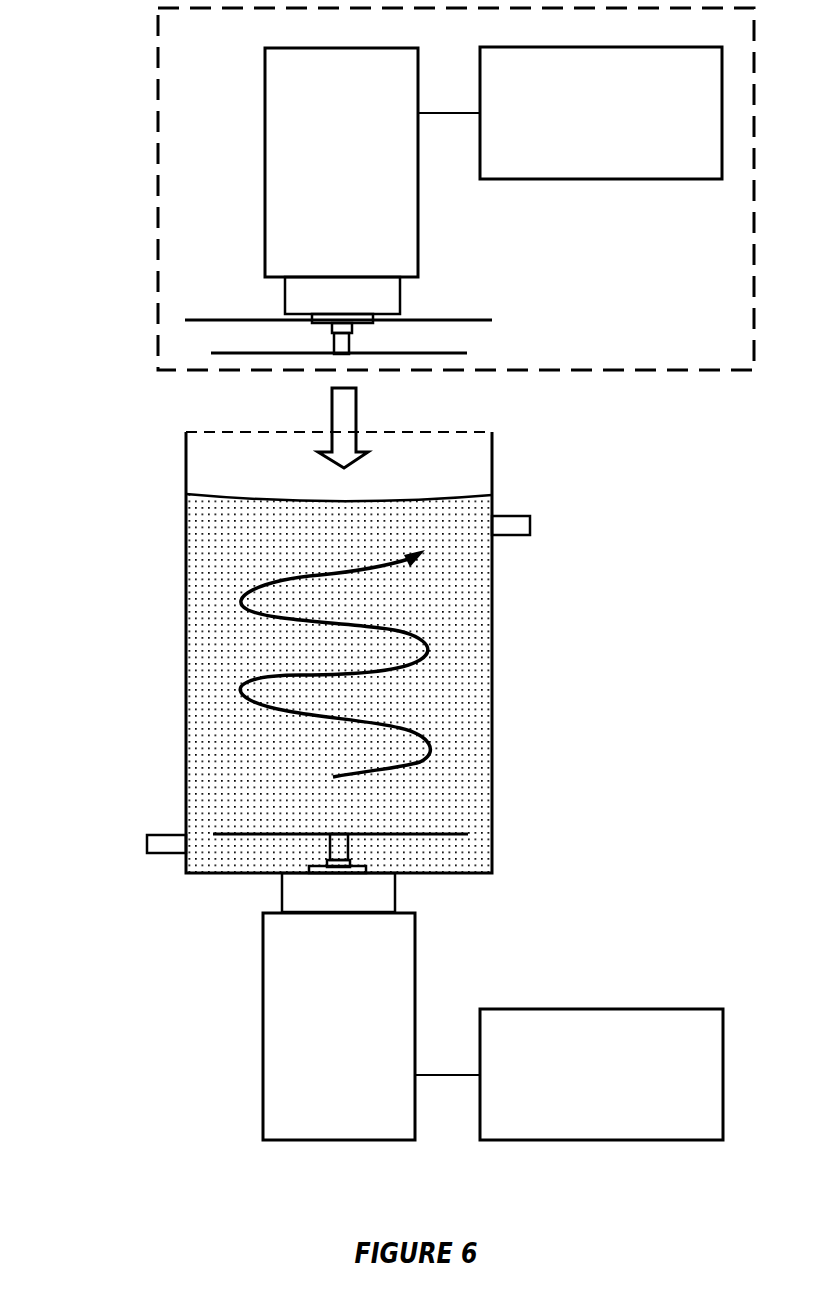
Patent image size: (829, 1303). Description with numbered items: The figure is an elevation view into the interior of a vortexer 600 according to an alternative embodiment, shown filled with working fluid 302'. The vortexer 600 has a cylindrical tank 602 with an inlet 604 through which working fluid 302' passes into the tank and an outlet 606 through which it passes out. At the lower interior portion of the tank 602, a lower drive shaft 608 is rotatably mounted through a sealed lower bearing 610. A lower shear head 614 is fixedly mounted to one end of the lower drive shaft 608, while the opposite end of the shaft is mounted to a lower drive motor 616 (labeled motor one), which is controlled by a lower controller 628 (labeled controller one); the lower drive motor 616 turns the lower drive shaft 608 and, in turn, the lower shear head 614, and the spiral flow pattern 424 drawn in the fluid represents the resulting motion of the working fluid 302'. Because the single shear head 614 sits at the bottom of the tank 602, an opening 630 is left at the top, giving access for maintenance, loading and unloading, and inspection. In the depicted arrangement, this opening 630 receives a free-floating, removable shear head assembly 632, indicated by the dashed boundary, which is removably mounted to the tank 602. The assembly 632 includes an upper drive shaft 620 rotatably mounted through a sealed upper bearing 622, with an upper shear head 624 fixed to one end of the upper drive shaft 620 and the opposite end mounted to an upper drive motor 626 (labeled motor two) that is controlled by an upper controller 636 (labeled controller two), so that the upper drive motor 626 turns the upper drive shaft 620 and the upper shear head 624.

The vortexer 600 is at (172, 426).
The cylindrical tank 602 is at (186, 683).
The inlet 604 is at (147, 853).
The outlet 606 is at (522, 516).
The lower drive shaft 608 is at (348, 848).
The sealed lower bearing 610 is at (320, 862).
The lower shear head 614 is at (313, 834).
The lower drive motor 616 is at (415, 945).
The upper drive shaft 620 is at (332, 343).
The sealed upper bearing 622 is at (362, 327).
The upper shear head 624 is at (373, 355).
The upper drive motor 626 is at (265, 203).
The lower controller 628 is at (575, 1009).
The opening 630 is at (477, 432).
The removable shear head assembly 632 is at (152, 208).
The upper controller 636 is at (580, 179).
The working fluid 302' is at (303, 683).
The flow pattern 424 is at (302, 676).